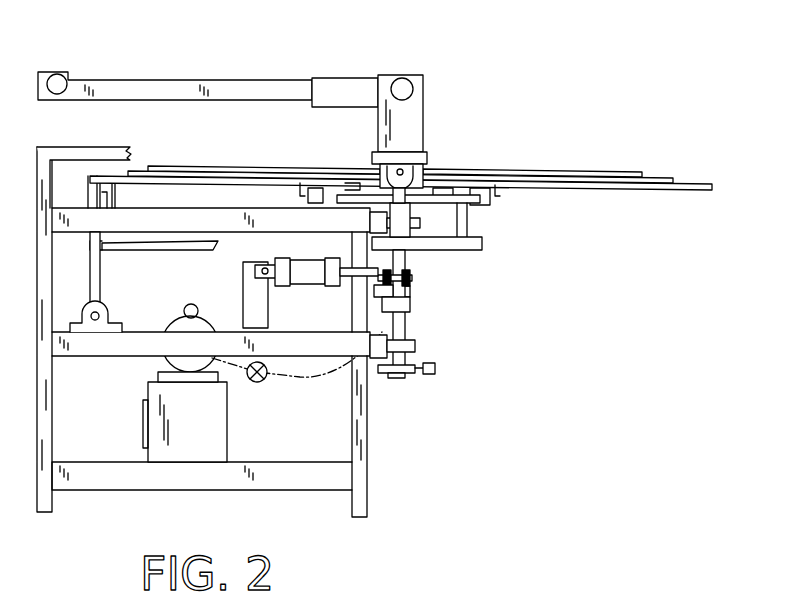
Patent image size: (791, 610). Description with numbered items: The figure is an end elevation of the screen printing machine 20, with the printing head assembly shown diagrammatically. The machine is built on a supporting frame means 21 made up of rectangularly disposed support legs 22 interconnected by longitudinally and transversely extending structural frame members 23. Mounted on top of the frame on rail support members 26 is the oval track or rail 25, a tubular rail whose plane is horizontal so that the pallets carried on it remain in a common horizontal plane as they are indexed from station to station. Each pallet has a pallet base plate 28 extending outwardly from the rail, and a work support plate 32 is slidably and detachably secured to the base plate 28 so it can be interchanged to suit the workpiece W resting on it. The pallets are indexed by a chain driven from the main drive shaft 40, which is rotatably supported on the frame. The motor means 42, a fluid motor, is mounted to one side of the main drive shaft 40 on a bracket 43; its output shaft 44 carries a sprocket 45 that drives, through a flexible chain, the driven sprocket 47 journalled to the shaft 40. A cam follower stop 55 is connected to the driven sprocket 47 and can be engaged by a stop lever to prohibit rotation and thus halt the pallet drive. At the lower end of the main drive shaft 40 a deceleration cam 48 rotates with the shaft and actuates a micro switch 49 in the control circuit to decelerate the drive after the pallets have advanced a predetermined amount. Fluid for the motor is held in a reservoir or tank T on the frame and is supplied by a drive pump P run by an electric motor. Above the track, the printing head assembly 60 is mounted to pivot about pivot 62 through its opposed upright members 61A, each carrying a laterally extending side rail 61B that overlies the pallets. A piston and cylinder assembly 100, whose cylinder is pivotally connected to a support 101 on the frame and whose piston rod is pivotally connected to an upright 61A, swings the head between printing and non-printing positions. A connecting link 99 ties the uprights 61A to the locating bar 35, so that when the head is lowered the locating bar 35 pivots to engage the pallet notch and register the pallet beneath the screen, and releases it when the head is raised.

The screen printing machine 20 is at (444, 66).
The supporting frame means 21 is at (384, 461).
The support legs 22 is at (45, 427).
The structural frame members 23 is at (148, 229).
The oval track or rail 25 is at (409, 222).
The rail support members 26 is at (322, 204).
The pallet base plate 28 is at (682, 190).
The work support plate 32 is at (655, 178).
The locating bar 35 is at (92, 262).
The main drive shaft 40 is at (402, 244).
The motor means 42 is at (411, 306).
The bracket 43 is at (363, 324).
The output shaft 44 is at (410, 290).
The sprocket 45 is at (405, 274).
The driven sprocket 47 is at (412, 279).
The deceleration cam 48 is at (410, 378).
The micro switch 49 is at (436, 369).
The cam follower stop 55 is at (368, 297).
The printing head assembly 60 is at (341, 72).
The upright members 61A is at (412, 120).
The side rail 61B is at (246, 76).
The pivot 62 is at (412, 174).
The connecting link 99 is at (172, 252).
The piston and cylinder assembly 100 is at (322, 282).
The support 101 is at (243, 283).
The drive pump P is at (206, 314).
The reservoir or tank T is at (225, 422).
The workpiece W is at (236, 166).